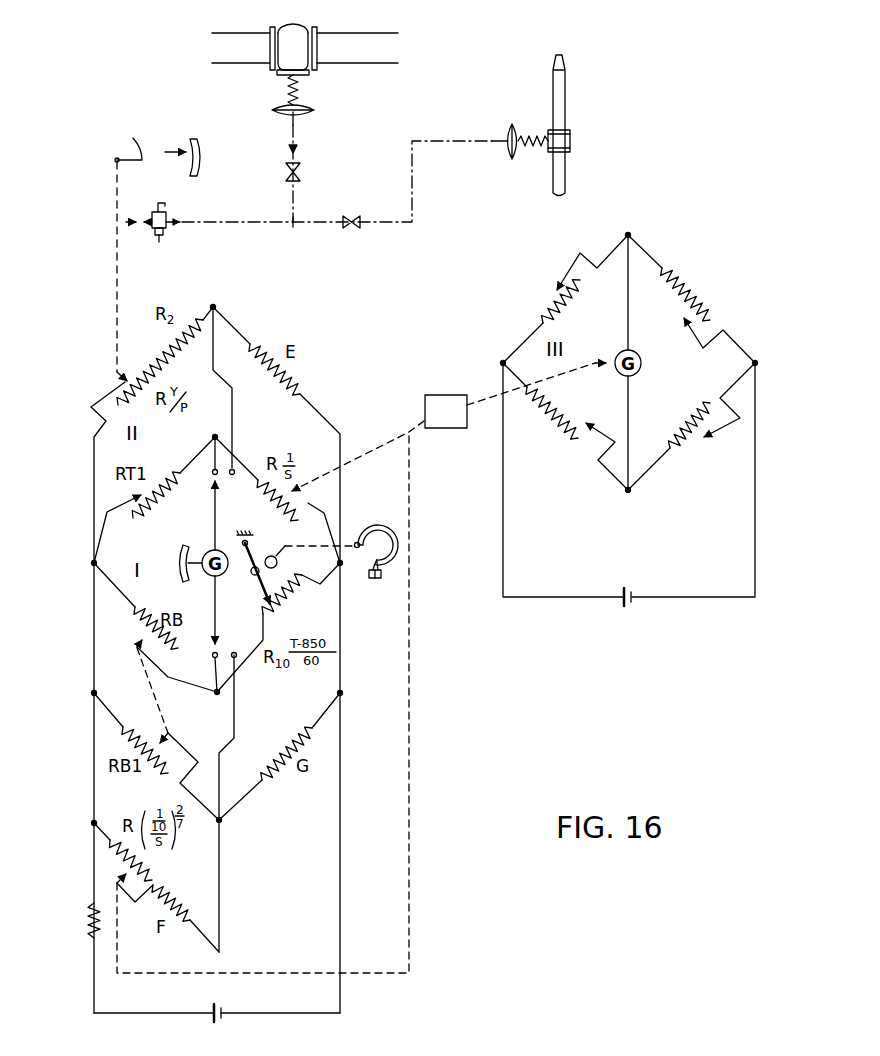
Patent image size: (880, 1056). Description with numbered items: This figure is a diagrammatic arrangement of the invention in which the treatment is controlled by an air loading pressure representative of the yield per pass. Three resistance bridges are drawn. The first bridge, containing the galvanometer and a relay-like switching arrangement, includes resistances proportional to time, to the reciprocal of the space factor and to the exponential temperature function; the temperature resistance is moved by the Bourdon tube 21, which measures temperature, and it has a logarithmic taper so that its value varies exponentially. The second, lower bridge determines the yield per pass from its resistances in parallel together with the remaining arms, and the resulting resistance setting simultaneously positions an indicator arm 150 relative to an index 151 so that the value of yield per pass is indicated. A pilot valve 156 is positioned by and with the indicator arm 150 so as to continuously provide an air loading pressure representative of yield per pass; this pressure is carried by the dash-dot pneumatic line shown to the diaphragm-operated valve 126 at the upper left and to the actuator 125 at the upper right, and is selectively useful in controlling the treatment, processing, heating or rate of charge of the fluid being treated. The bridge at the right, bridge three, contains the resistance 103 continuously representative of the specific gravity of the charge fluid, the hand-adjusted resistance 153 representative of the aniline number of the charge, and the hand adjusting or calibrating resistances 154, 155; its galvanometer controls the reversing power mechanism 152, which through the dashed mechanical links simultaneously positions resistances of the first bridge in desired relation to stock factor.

The control valve 126 is at (310, 75).
The pneumatic actuator 125 is at (514, 124).
The indicator arm 150 is at (125, 250).
The index 151 is at (197, 142).
The pilot valve 156 is at (167, 229).
The reversing power mechanism 152 is at (443, 427).
The Bourdon tube 21 is at (380, 524).
The resistance 103 is at (565, 299).
The calibrating resistance 155 is at (691, 299).
The resistance 153 is at (691, 426).
The calibrating resistance 154 is at (565, 426).